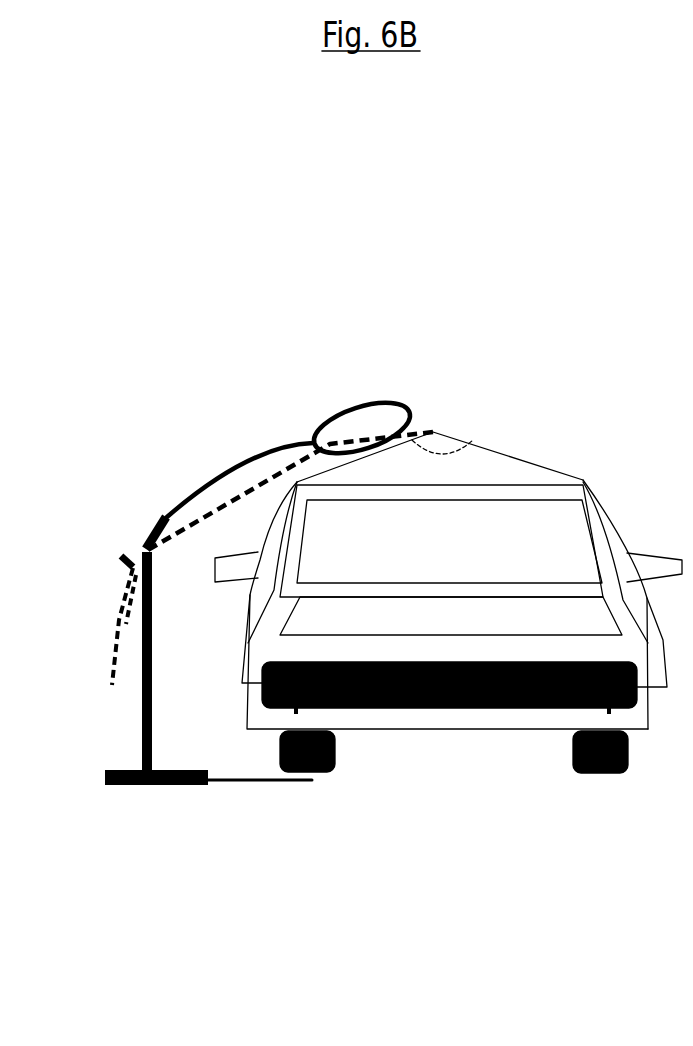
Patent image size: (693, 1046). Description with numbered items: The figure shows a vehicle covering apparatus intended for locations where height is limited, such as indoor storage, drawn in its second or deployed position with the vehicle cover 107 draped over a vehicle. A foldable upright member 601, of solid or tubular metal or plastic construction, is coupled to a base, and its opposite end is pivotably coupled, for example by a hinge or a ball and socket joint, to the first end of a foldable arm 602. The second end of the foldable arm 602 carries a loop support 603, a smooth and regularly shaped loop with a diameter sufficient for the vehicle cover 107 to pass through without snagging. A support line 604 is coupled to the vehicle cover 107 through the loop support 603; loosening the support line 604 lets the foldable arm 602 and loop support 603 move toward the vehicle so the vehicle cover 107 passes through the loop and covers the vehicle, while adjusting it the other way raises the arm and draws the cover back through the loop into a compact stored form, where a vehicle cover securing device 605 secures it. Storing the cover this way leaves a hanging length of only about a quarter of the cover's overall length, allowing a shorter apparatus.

The vehicle cover 107 is at (533, 337).
The foldable upright member 601 is at (38, 690).
The foldable arm 602 is at (130, 365).
The loop support 603 is at (253, 323).
The support line 604 is at (76, 450).
The vehicle cover securing device 605 is at (11, 588).